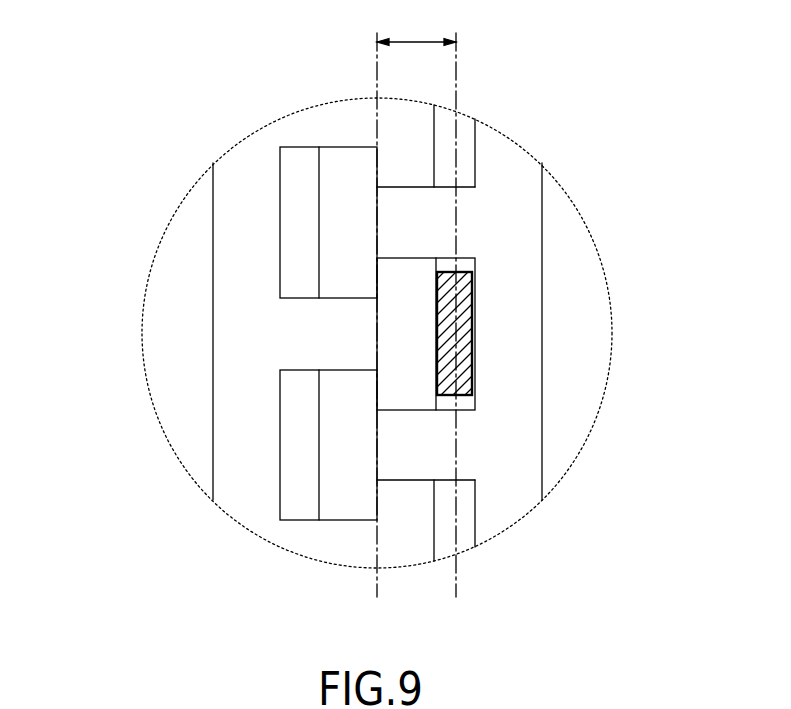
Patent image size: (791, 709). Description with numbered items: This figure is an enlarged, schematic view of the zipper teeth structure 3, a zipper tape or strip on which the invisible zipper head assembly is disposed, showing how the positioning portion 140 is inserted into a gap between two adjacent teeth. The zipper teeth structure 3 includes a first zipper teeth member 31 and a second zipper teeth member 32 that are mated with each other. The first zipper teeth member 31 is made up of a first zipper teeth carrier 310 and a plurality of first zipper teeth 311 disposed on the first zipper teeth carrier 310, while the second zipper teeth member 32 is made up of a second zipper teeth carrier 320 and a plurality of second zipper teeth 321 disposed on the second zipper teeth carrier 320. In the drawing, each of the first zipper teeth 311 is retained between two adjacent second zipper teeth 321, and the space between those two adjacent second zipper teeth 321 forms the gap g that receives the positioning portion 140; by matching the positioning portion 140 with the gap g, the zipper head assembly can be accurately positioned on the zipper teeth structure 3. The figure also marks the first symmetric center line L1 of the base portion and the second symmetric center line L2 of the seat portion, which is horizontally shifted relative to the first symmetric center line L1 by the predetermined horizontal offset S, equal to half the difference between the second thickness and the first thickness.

The zipper teeth structure 3 is at (229, 132).
The first zipper teeth member 31 is at (193, 333).
The first zipper teeth carrier 310 is at (175, 253).
The first zipper teeth 311 is at (342, 339).
The second zipper teeth member 32 is at (525, 371).
The second zipper teeth carrier 320 is at (568, 310).
The second zipper teeth 321 is at (413, 220).
The positioning portion 140 is at (460, 353).
The gap g is at (462, 398).
The first symmetric center line L1 is at (457, 80).
The second symmetric center line L2 is at (377, 80).
The predetermined horizontal offset S is at (416, 29).